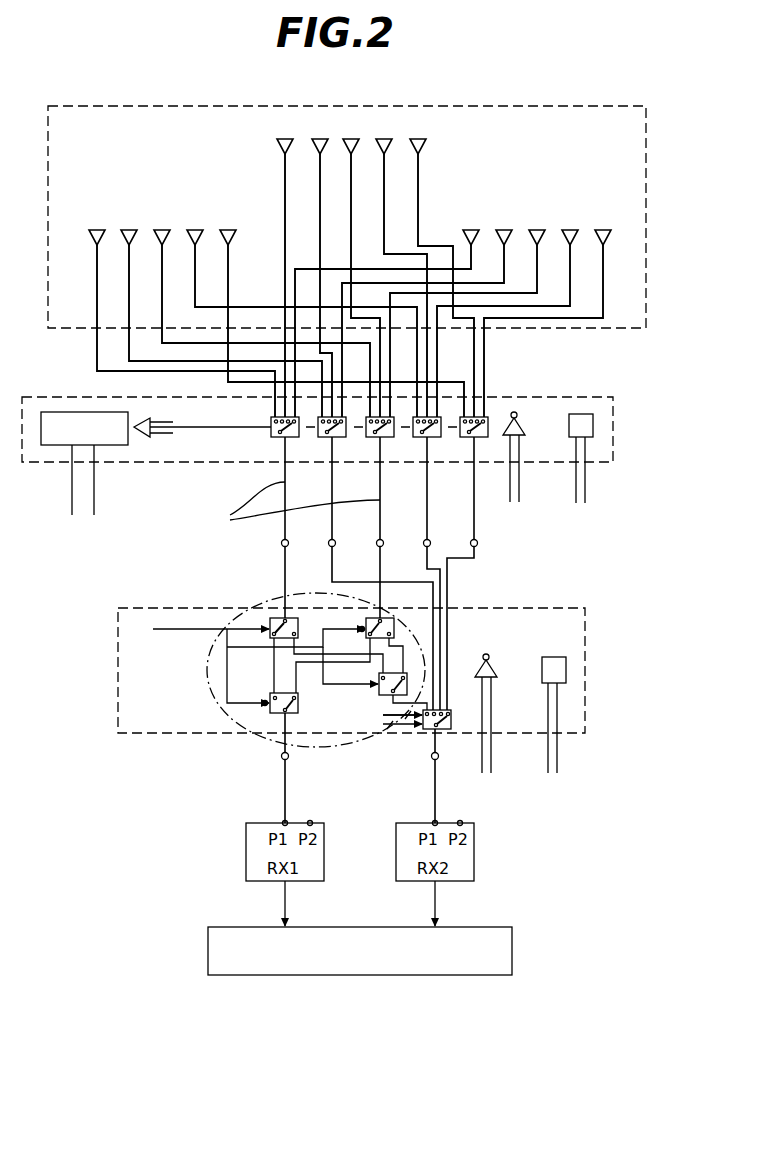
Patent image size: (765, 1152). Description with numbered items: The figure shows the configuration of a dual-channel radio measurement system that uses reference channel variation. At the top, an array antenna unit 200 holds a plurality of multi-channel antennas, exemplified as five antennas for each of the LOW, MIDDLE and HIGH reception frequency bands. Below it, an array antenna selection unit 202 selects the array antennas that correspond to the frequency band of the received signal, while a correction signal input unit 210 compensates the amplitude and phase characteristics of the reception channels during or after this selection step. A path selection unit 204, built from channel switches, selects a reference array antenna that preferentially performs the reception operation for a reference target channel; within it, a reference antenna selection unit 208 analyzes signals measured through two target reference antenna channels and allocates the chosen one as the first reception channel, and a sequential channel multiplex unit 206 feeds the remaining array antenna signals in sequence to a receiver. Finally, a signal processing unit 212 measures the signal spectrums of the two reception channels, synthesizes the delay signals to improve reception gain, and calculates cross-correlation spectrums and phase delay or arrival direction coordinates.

The array antenna unit 200 is at (646, 149).
The array antenna selection unit 202 is at (613, 422).
The path selection unit 204 is at (585, 633).
The sequential channel multiplex unit 206 is at (452, 708).
The reference antenna selection unit 208 is at (217, 708).
The correction signal input unit 210 is at (137, 437).
The signal processing unit 212 is at (512, 935).